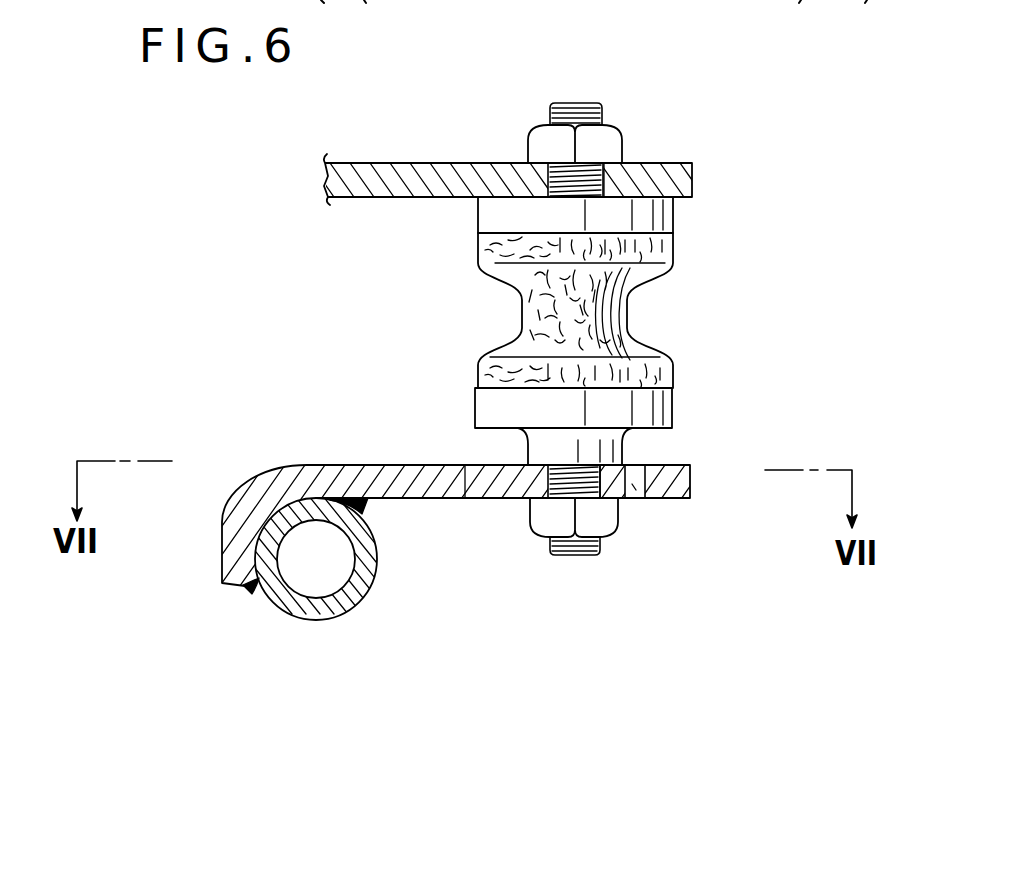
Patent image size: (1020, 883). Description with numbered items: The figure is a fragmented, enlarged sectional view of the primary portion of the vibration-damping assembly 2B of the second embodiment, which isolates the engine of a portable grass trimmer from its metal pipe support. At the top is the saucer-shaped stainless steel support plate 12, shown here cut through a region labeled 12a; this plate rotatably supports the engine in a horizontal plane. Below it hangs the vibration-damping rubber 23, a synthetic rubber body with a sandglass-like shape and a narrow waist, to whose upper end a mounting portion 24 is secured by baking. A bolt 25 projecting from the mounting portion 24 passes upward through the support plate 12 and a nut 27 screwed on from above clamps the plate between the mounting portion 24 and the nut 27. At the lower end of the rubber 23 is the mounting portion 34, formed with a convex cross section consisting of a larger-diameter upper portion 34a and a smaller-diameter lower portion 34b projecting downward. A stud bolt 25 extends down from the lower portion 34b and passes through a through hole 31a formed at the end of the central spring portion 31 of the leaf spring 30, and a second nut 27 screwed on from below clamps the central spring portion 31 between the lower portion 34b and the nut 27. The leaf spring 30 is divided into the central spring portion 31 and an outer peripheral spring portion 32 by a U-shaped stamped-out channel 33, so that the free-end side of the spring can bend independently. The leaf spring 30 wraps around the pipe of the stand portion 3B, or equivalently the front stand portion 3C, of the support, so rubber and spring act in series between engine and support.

The support plate 12 is at (545, 138).
The mounting portion of panel 12a is at (540, 166).
The bolt 25 is at (572, 103).
The nut 27 is at (612, 130).
The mounting portion 24 is at (660, 213).
The vibration-damping rubber 23 is at (617, 308).
The vibration-damping assembly 2B is at (683, 332).
The mounting portion 34 is at (683, 424).
The upper portion 34a is at (660, 412).
The lower portion 34b is at (615, 443).
The leaf spring 30 is at (474, 488).
The central spring portion 31 is at (699, 535).
The through hole 31a is at (465, 500).
The outer peripheral spring portion 32 is at (688, 482).
The U-shaped stamped-out channel 33 is at (628, 498).
The stand portion 3B is at (357, 598).
The front stand portion 3C is at (326, 592).